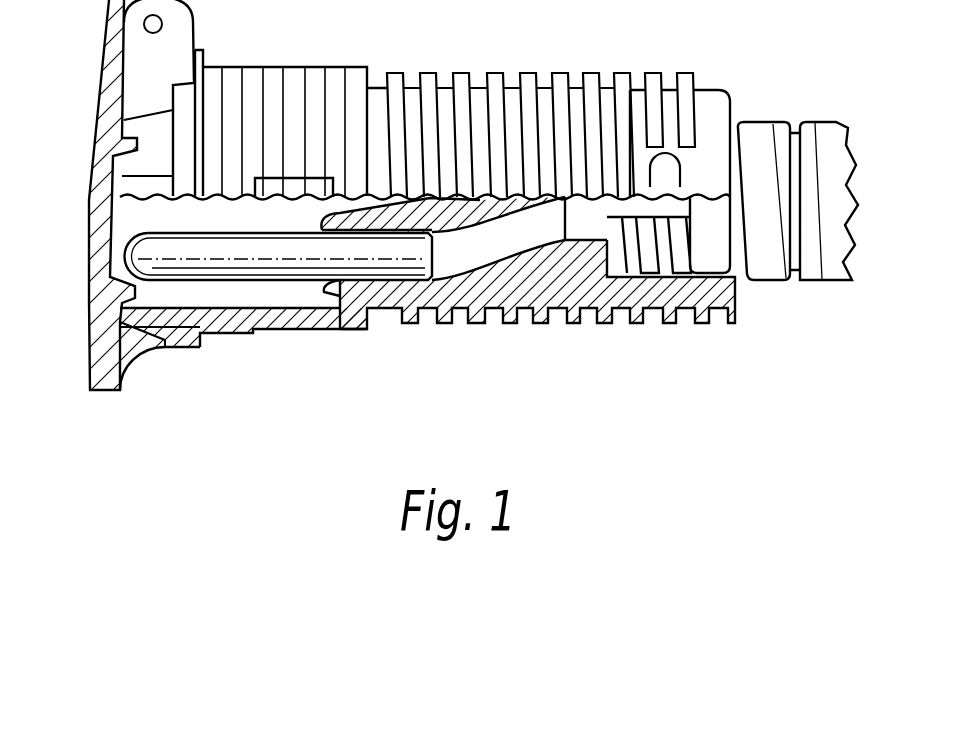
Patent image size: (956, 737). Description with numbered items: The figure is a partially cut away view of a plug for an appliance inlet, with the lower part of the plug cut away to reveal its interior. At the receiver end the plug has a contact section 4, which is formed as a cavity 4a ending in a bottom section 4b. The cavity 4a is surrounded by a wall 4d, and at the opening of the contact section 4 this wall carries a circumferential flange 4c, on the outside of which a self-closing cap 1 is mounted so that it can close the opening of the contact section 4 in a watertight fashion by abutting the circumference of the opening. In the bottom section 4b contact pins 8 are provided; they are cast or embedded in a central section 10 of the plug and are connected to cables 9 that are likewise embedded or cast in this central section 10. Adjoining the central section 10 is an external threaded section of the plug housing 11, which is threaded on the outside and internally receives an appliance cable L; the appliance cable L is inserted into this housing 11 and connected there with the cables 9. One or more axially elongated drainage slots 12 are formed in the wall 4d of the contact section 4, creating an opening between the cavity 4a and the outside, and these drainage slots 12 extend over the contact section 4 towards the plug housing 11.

The self-closing cap 1 is at (110, 72).
The contact section 4 is at (275, 78).
The cavity 4a is at (130, 218).
The bottom section 4b is at (340, 213).
The circumferential flange 4c is at (183, 343).
The wall 4d is at (235, 333).
The contact pins 8 is at (140, 258).
The cables 9 is at (460, 267).
The central section 10 is at (547, 280).
The external threaded section of plug housing 11 is at (527, 73).
The drainage slots 12 is at (290, 185).
The appliance cable L is at (760, 137).